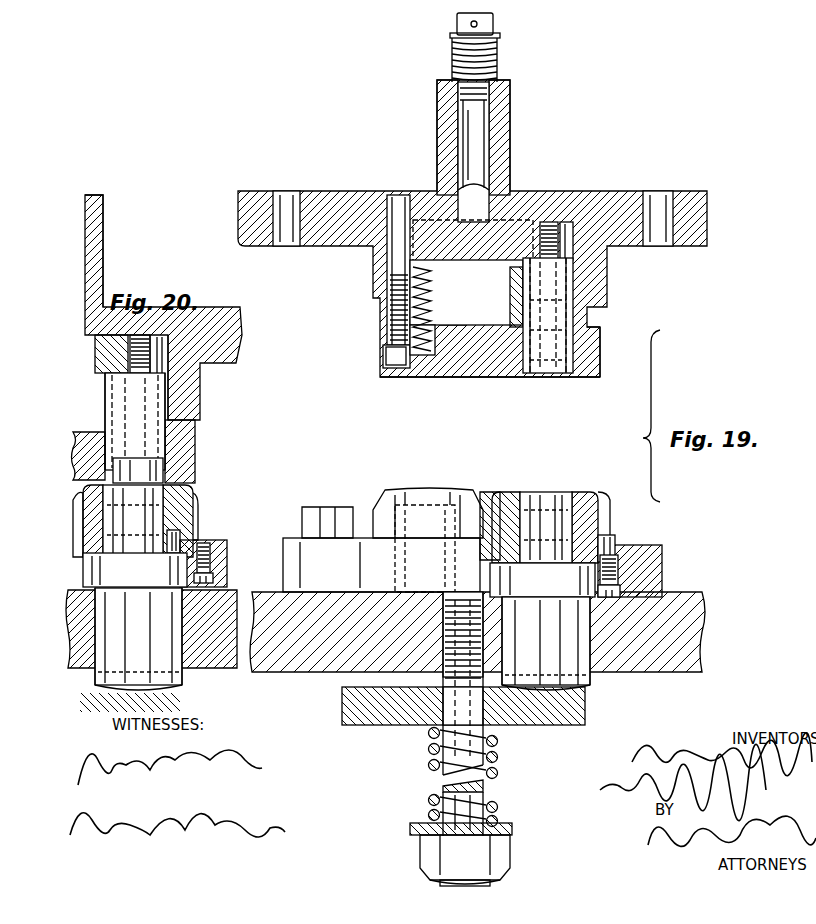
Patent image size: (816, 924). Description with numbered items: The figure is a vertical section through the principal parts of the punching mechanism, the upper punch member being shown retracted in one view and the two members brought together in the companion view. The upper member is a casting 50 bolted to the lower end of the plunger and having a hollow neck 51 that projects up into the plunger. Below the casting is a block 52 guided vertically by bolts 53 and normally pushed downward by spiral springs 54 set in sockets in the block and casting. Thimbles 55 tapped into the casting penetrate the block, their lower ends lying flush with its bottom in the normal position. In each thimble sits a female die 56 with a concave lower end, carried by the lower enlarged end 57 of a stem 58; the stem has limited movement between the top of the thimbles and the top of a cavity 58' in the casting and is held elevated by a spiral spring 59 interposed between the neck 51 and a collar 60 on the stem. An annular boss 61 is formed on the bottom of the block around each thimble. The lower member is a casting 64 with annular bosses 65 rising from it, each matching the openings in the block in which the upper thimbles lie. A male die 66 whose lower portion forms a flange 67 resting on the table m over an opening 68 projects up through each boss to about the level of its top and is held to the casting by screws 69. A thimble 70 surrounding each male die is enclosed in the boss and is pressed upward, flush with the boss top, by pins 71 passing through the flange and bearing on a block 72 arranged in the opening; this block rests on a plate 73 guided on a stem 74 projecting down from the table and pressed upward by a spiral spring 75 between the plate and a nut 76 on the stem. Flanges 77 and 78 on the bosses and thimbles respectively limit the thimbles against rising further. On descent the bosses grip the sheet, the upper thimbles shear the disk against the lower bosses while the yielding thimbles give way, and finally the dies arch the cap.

In FIG. 19, the casting 50 is at (707, 228).
In FIG. 20, the casting 50 is at (240, 342).
In FIG. 19, the hollow neck 51 is at (508, 154).
In FIG. 20, the hollow neck 51 is at (102, 252).
In FIG. 19, the block 52 is at (600, 352).
In FIG. 20, the block 52 is at (180, 455).
In FIG. 19, the bolts 53 is at (393, 258).
In FIG. 19, the spiral springs 54 is at (417, 305).
In FIG. 19, the thimbles 55 is at (588, 320).
In FIG. 20, the thimbles 55 is at (183, 428).
In FIG. 19, the female die 56 is at (541, 315).
In FIG. 20, the female die 56 is at (150, 428).
In FIG. 19, the lower enlarged end 57 is at (473, 272).
In FIG. 20, the lower enlarged end 57 is at (98, 367).
In FIG. 19, the stem 58 is at (441, 152).
In FIG. 20, the stem 58 is at (182, 377).
In FIG. 19, the cavity 58' is at (581, 219).
In FIG. 19, the spiral spring 59 is at (497, 54).
In FIG. 19, the collar 60 is at (500, 36).
In FIG. 19, the annular boss 61 is at (490, 387).
In FIG. 19, the casting 64 is at (662, 580).
In FIG. 20, the casting 64 is at (210, 560).
In FIG. 19, the annular bosses 65 is at (383, 494).
In FIG. 20, the annular bosses 65 is at (193, 513).
In FIG. 19, the male die 66 is at (546, 527).
In FIG. 20, the male die 66 is at (133, 521).
In FIG. 19, the flange 67 is at (542, 580).
In FIG. 20, the flange 67 is at (135, 570).
In FIG. 19, the opening 68 is at (590, 660).
In FIG. 20, the opening 68 is at (87, 658).
In FIG. 19, the screws 69 is at (618, 570).
In FIG. 20, the screws 69 is at (203, 563).
In FIG. 19, the thimble 70 is at (580, 495).
In FIG. 20, the thimble 70 is at (173, 505).
In FIG. 19, the pins 71 is at (577, 550).
In FIG. 20, the pins 71 is at (180, 540).
In FIG. 19, the block 72 is at (546, 643).
In FIG. 20, the block 72 is at (138, 639).
In FIG. 19, the plate 73 is at (540, 723).
In FIG. 20, the plate 73 is at (185, 702).
In FIG. 19, the stem 74 is at (457, 758).
In FIG. 19, the spiral spring 75 is at (497, 760).
In FIG. 19, the nut 76 is at (502, 855).
In FIG. 19, the flange 77 is at (500, 503).
In FIG. 19, the flange 78 is at (487, 540).
In FIG. 19, the table m is at (662, 672).
In FIG. 20, the table m is at (202, 660).